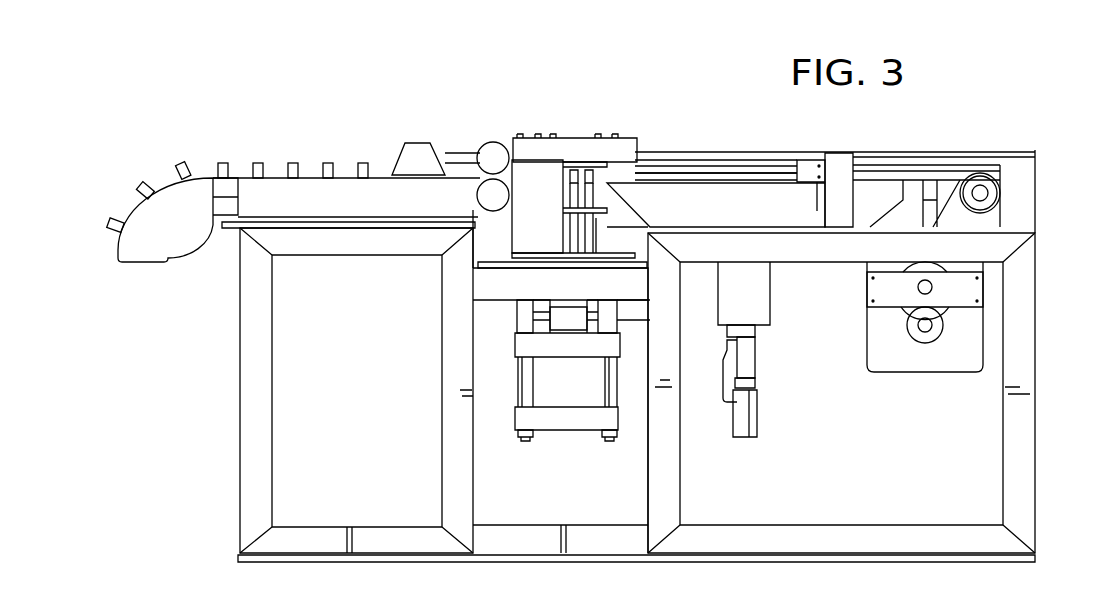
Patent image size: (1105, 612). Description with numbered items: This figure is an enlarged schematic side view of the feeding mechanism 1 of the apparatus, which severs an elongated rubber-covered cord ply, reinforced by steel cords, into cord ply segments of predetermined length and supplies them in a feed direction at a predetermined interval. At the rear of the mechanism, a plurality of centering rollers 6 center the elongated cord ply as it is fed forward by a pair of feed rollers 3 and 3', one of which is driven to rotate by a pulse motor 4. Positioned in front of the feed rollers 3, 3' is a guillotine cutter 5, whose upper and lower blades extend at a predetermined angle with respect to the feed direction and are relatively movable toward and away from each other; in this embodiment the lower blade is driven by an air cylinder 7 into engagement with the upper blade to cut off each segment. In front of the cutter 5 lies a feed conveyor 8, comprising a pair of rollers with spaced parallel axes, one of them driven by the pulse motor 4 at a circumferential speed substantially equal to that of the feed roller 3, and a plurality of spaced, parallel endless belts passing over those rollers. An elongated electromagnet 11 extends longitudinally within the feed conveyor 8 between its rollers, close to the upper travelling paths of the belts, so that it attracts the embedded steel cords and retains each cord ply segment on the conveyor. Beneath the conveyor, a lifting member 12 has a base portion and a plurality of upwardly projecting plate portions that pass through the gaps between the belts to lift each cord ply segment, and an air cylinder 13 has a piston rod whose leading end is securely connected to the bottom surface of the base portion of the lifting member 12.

The feeding mechanism 1 is at (896, 146).
The feed roller 3 is at (450, 140).
The feed roller 3' is at (475, 195).
The pulse motor 4 is at (924, 373).
The guillotine cutter 5 is at (609, 194).
The centering rollers 6 is at (227, 160).
The air cylinder 7 is at (574, 428).
The feed conveyor 8 is at (762, 192).
The electromagnet 11 is at (700, 181).
The lifting member 12 is at (818, 211).
The air cylinder 13 is at (757, 365).